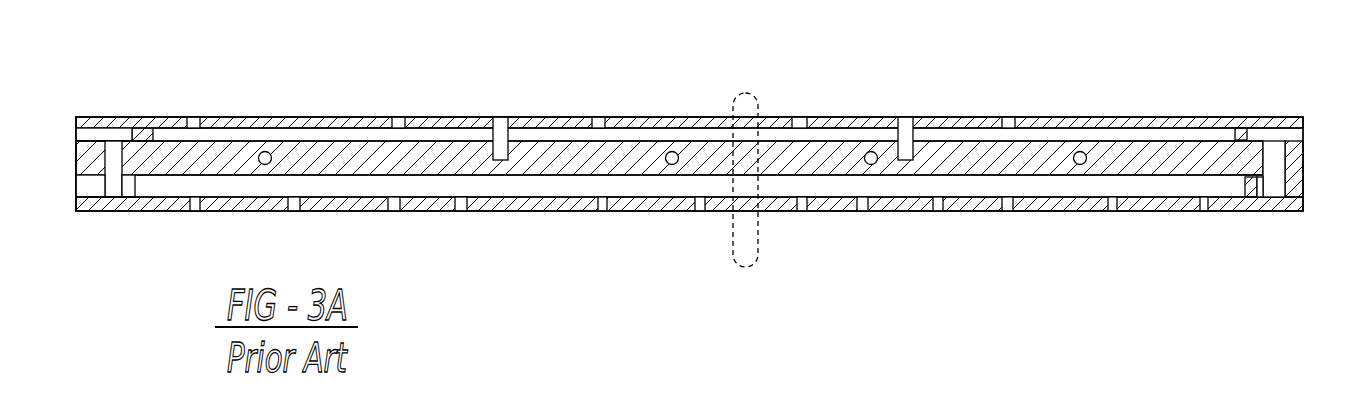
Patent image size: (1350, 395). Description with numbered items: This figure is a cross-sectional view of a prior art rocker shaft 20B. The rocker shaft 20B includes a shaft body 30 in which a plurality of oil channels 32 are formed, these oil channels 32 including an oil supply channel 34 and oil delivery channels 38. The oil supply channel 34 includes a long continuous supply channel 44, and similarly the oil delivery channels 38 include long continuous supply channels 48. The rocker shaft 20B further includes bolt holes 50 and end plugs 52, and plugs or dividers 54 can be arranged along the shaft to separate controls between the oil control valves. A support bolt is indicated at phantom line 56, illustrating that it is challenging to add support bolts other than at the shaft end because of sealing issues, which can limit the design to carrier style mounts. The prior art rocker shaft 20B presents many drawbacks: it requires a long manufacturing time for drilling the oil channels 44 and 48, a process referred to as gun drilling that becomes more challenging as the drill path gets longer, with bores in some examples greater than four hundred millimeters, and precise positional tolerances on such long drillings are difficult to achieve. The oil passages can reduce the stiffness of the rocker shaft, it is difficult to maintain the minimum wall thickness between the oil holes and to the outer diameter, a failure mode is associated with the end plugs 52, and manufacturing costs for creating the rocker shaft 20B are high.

The shaft body 30 is at (942, 117).
The rocker shaft 20B is at (1128, 117).
The long continuous supply channels 48 is at (1050, 130).
The oil supply channel 34 is at (1082, 186).
The long continuous supply channel 44 is at (905, 186).
The oil channels 32 is at (1018, 224).
The oil delivery channels 38 is at (192, 117).
The plugs or dividers 54 is at (500, 117).
The support bolt (phantom line) 56 is at (754, 93).
The bolt holes 50 is at (1276, 157).
The end plugs 52 is at (1252, 177).